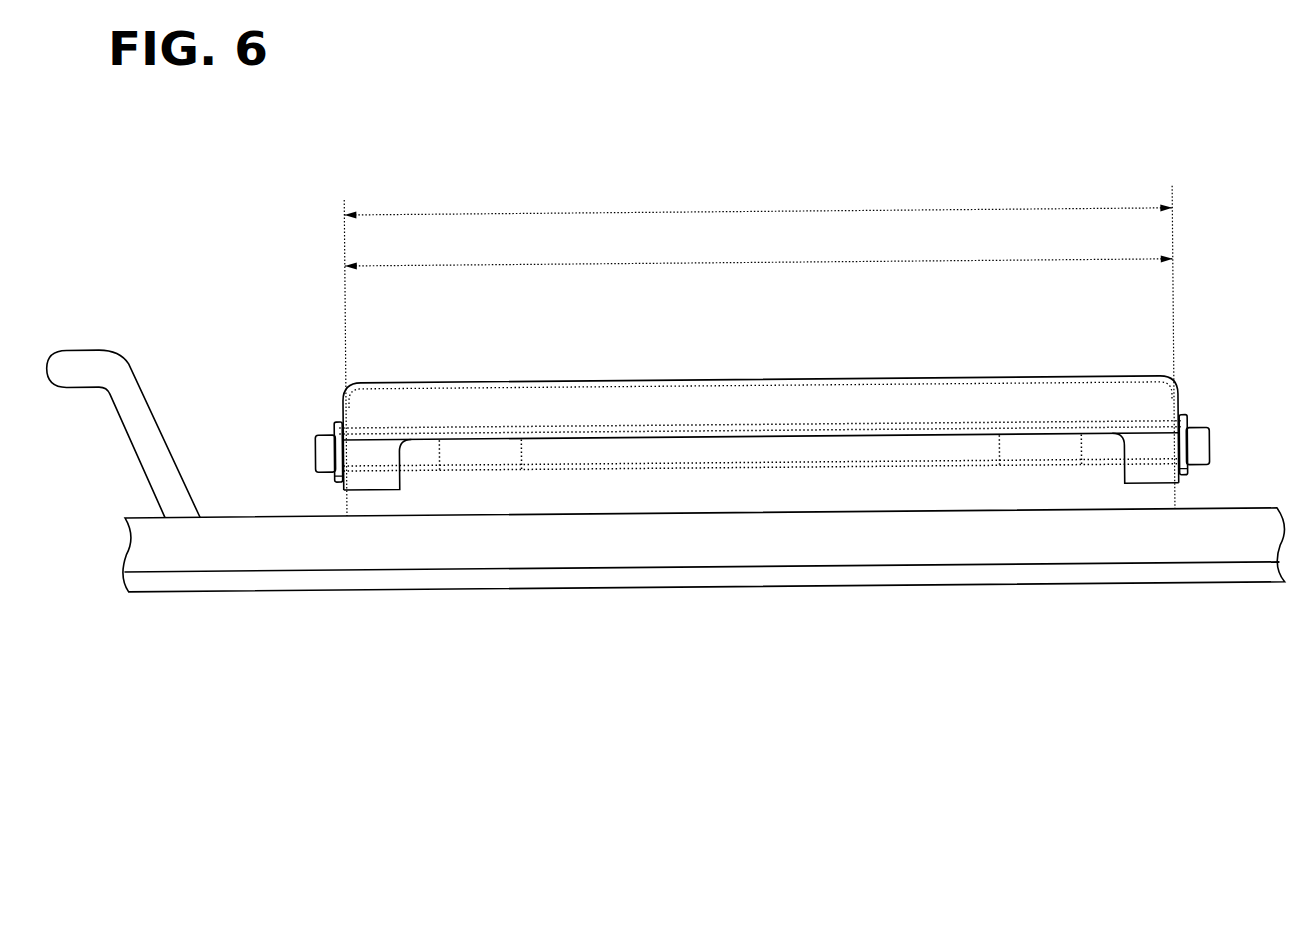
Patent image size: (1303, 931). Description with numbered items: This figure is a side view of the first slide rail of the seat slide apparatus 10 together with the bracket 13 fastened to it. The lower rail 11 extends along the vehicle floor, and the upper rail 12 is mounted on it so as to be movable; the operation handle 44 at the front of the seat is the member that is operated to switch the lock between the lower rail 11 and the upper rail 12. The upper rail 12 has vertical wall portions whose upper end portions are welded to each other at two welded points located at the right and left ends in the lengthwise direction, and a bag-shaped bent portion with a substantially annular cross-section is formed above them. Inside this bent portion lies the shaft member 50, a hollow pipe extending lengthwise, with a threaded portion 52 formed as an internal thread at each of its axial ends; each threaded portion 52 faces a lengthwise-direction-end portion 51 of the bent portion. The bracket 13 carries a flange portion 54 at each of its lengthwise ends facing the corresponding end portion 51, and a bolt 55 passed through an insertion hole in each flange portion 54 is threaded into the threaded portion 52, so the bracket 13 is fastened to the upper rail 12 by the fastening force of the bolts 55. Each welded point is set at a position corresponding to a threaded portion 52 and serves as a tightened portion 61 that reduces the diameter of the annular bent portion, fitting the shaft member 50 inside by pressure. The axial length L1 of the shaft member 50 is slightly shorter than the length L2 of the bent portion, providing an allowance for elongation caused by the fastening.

The seat slide apparatus 10 is at (246, 397).
The lower rail 11 is at (220, 516).
The upper rail 12 is at (724, 430).
The bracket 13 is at (621, 383).
The operation handle 44 is at (88, 348).
The shaft member 50 is at (723, 472).
The lengthwise-direction-end portion 51 is at (337, 424).
The threaded portion 52 is at (463, 458).
The flange portion 54 is at (337, 478).
The bolt 55 is at (316, 447).
The tightened portion 61 is at (383, 497).
The axial length of the shaft member L1 is at (757, 266).
The length of the bent portion L2 is at (757, 215).